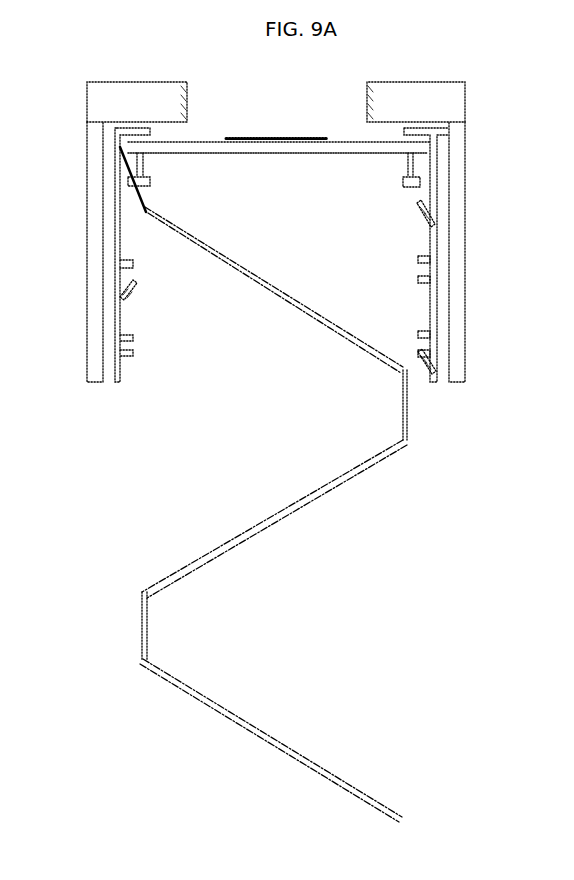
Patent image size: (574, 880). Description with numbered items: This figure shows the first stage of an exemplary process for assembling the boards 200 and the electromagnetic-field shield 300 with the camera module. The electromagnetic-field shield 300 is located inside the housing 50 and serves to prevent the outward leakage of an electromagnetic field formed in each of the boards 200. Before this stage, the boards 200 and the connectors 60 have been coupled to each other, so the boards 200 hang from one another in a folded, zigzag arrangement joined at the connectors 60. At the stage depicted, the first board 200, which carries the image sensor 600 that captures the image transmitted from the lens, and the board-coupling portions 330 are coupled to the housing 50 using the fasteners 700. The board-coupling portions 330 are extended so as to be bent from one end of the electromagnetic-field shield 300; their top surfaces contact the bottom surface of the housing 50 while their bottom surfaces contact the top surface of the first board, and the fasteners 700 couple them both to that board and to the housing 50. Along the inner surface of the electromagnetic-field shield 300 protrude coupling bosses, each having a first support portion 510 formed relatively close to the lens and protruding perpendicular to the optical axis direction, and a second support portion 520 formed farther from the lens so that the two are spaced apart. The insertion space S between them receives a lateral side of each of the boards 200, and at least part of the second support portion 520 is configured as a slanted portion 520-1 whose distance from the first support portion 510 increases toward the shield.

The housing 50 is at (87, 100).
The board-coupling portions 330 is at (135, 122).
The electromagnetic-field shield 300 is at (118, 236).
The image sensor 600 is at (277, 135).
The fasteners 700 is at (150, 185).
The insertion space S is at (432, 200).
The first support portion 510 is at (430, 260).
The second support portion 520 is at (430, 280).
The slanted portion 520-1 is at (430, 352).
The boards 200 is at (342, 155).
The connectors 60 is at (117, 172).